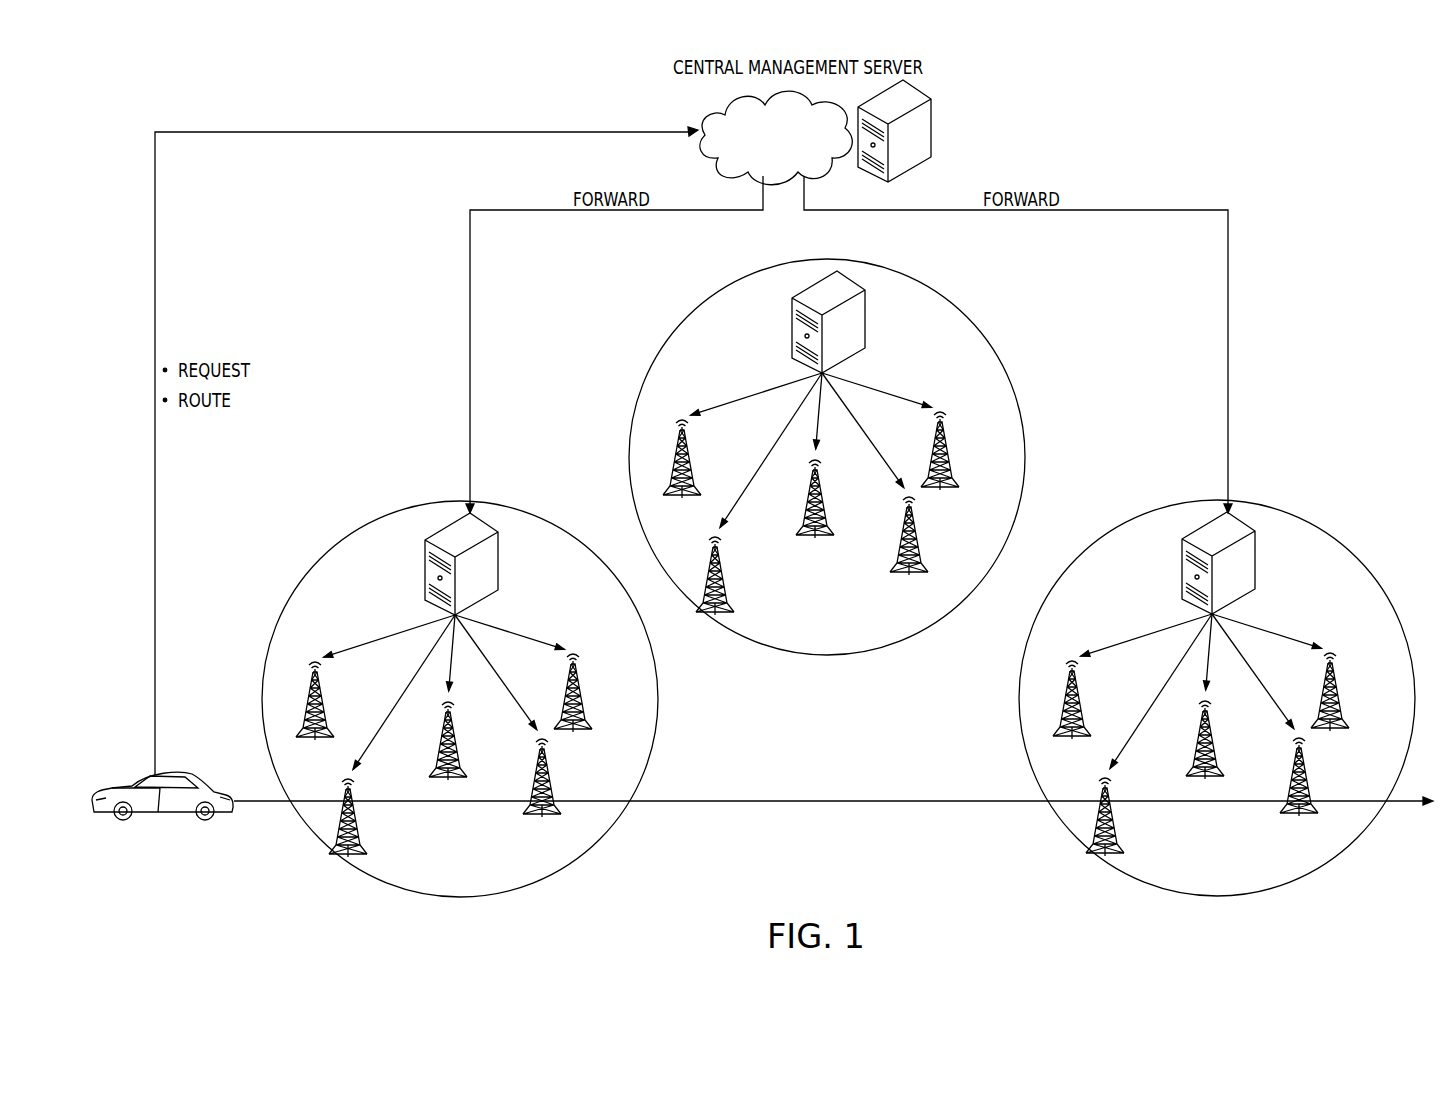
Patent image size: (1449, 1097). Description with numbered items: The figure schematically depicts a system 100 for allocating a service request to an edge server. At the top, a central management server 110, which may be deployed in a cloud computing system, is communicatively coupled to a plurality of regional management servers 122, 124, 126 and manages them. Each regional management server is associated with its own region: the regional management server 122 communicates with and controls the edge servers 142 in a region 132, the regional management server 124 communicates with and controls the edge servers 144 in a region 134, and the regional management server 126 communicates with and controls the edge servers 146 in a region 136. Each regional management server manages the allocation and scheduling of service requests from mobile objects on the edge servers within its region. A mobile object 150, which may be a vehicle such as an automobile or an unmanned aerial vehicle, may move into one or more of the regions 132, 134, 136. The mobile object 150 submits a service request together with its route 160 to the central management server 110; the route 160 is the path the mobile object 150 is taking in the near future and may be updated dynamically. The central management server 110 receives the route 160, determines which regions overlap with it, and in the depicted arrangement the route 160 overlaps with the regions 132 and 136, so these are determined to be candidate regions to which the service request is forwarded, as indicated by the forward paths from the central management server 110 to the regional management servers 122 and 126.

The system 100 is at (1280, 200).
The central management server 110 is at (934, 133).
The regional management server 122 is at (500, 566).
The regional management server 124 is at (864, 322).
The regional management server 126 is at (1254, 563).
The region 132 is at (293, 588).
The region 134 is at (810, 457).
The region 136 is at (1234, 698).
The edge servers 142 is at (322, 698).
The edge servers 144 is at (839, 494).
The edge servers 146 is at (1229, 735).
The mobile object 150 is at (118, 777).
The route 160 is at (718, 800).